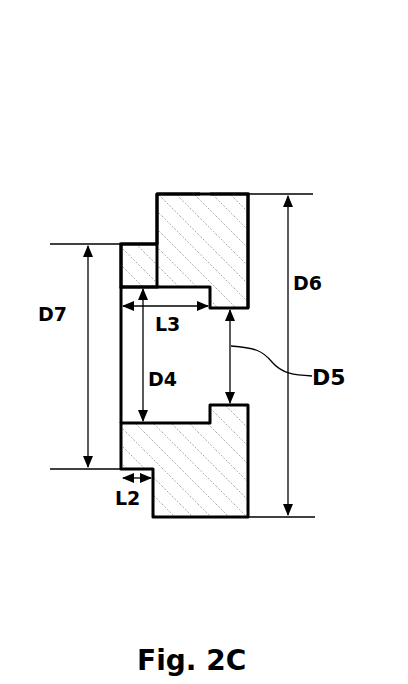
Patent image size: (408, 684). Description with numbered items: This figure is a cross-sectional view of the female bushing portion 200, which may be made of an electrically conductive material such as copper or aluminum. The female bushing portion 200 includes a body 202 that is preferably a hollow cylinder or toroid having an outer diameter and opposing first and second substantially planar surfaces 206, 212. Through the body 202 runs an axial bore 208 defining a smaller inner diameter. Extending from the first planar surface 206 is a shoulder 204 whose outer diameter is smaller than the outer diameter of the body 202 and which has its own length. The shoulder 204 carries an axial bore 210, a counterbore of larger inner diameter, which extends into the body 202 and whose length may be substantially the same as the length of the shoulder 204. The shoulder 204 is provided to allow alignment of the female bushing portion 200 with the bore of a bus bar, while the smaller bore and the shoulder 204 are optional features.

The female bushing portion 200 is at (138, 96).
The body 202 is at (223, 212).
The shoulder 204 is at (137, 265).
The first planar surface 206 is at (156, 213).
The axial bore 208 is at (240, 390).
The axial bore of the shoulder 210 is at (119, 356).
The second planar surface 212 is at (250, 210).